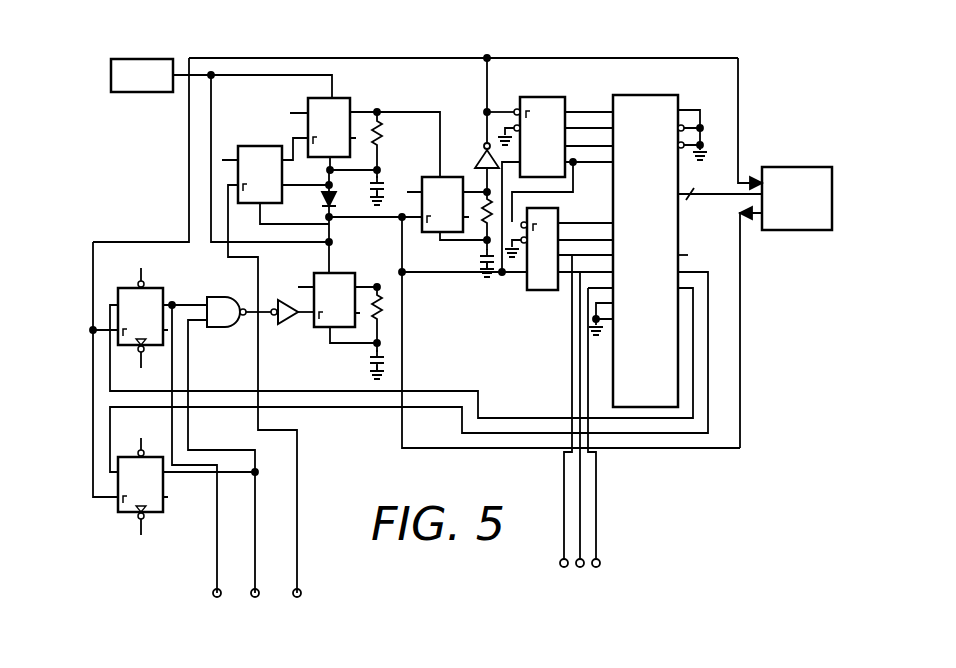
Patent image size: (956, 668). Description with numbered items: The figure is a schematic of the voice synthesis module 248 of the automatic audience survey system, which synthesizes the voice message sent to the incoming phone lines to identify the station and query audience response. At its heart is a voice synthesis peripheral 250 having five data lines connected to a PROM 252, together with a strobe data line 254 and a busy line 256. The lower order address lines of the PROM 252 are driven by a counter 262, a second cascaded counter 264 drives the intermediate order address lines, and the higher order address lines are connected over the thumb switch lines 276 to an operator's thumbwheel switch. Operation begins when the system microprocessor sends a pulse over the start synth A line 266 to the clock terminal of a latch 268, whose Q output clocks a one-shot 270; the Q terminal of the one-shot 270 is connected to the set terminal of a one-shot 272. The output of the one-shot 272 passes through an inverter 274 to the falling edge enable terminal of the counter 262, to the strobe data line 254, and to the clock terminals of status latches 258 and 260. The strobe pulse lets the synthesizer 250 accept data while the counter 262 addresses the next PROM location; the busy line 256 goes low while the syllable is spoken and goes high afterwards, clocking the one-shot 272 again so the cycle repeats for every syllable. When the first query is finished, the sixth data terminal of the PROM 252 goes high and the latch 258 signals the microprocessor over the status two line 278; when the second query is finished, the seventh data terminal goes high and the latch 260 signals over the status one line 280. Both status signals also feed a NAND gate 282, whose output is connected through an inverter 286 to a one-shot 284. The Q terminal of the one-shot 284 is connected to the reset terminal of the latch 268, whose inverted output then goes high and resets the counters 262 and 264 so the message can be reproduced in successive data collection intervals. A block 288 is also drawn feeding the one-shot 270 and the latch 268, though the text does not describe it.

The voice synthesis module 248 is at (752, 462).
The voice synthesis peripheral 250 is at (800, 167).
The PROM 252 is at (675, 251).
The strobe data line 254 is at (740, 148).
The busy line 256 is at (741, 280).
The status latch 258 is at (118, 512).
The status latch 260 is at (118, 292).
The counter 262 is at (538, 97).
The cascaded counter 264 is at (558, 210).
The start synth A line 266 is at (303, 470).
The latch 268 is at (271, 145).
The one-shot 270 is at (335, 96).
The one-shot 272 is at (433, 176).
The inverter 274 is at (475, 160).
The thumb switch lines 276 is at (566, 497).
The status 2 line 278 is at (254, 490).
The status 1 line 280 is at (216, 480).
The NAND gate 282 is at (230, 296).
The one-shot 284 is at (318, 272).
The inverter 286 is at (285, 324).
The clock 288 is at (142, 75).